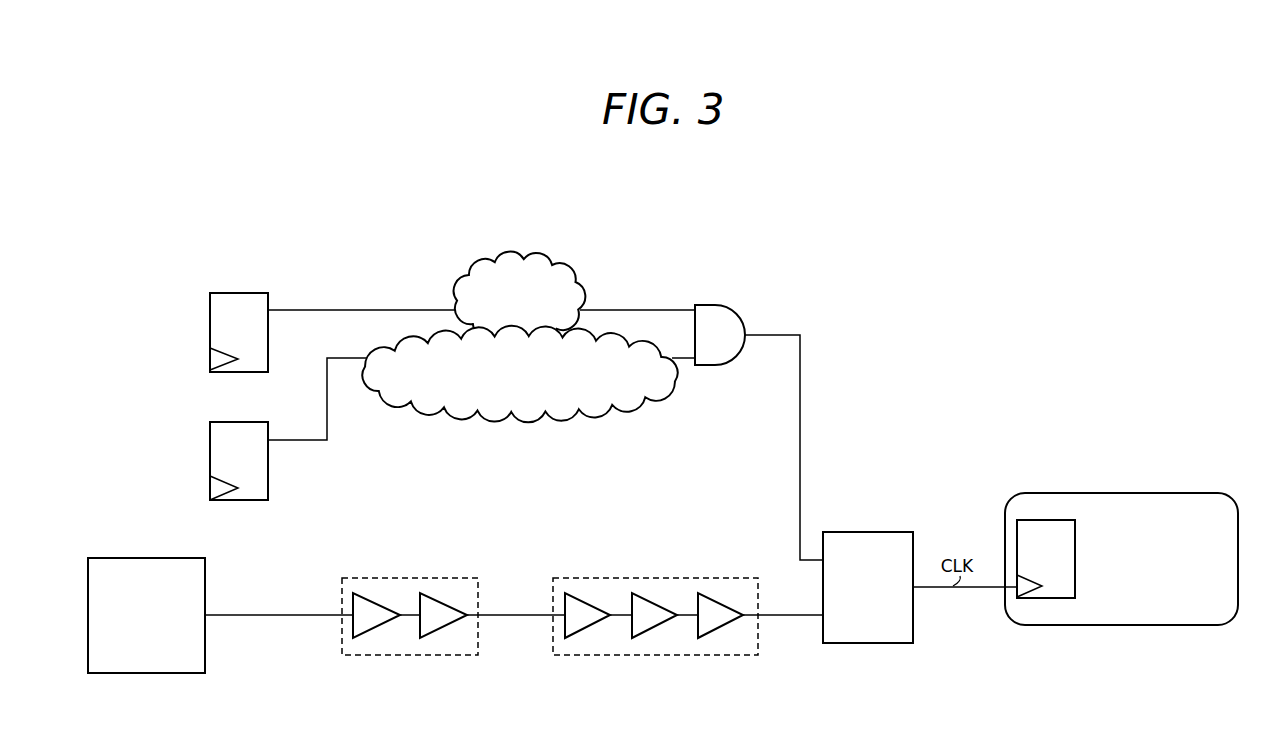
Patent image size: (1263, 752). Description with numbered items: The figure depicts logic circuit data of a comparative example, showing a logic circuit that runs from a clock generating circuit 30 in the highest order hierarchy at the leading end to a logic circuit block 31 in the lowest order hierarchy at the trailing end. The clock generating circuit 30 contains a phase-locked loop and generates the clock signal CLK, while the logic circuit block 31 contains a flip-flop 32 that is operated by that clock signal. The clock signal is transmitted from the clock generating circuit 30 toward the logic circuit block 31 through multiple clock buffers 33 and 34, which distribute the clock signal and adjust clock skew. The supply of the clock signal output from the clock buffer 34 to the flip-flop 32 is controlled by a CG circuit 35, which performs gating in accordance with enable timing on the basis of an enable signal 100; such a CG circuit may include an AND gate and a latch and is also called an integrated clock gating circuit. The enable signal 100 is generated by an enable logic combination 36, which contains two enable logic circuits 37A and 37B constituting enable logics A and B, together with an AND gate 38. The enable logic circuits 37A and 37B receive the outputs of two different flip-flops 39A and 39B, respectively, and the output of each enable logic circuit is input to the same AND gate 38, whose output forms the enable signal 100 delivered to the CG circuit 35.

The clock generating circuit 30 is at (143, 557).
The logic circuit block 31 is at (1118, 493).
The flip-flop 32 is at (1048, 598).
The clock buffer 33 is at (410, 658).
The clock buffer 34 is at (660, 658).
The CG circuit 35 is at (866, 532).
The enable logic combination 36 is at (592, 230).
The enable logic circuit 37A is at (507, 257).
The enable logic circuit 37B is at (535, 415).
The AND gate 38 is at (707, 303).
The flip-flop 39A is at (210, 329).
The flip-flop 39B is at (210, 459).
The enable signal 100 is at (802, 408).